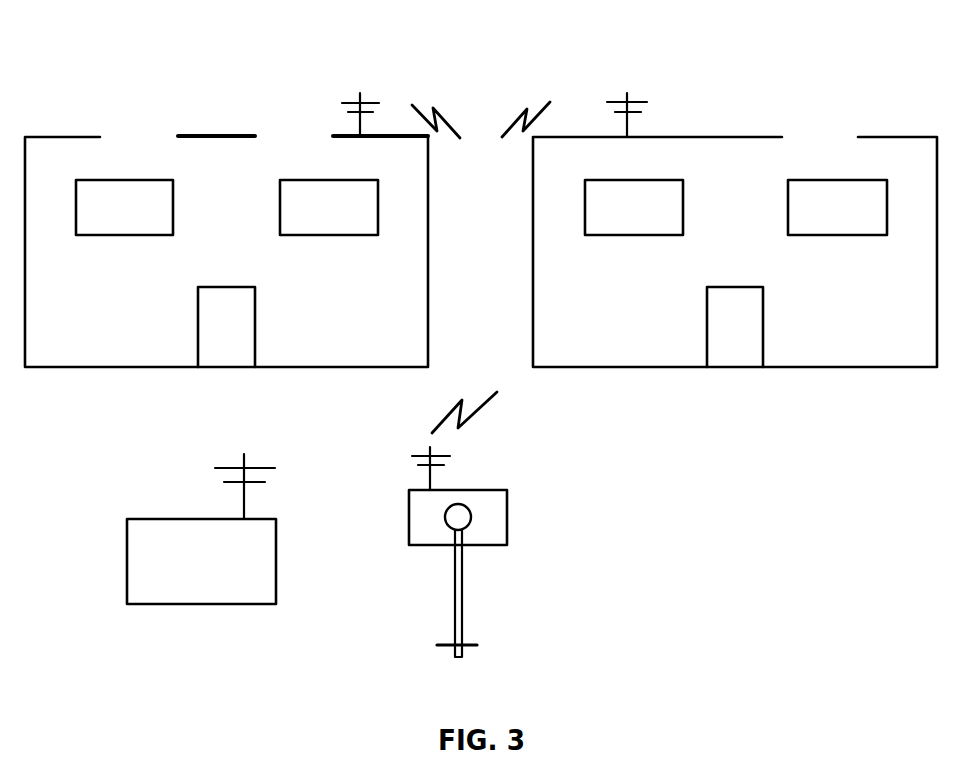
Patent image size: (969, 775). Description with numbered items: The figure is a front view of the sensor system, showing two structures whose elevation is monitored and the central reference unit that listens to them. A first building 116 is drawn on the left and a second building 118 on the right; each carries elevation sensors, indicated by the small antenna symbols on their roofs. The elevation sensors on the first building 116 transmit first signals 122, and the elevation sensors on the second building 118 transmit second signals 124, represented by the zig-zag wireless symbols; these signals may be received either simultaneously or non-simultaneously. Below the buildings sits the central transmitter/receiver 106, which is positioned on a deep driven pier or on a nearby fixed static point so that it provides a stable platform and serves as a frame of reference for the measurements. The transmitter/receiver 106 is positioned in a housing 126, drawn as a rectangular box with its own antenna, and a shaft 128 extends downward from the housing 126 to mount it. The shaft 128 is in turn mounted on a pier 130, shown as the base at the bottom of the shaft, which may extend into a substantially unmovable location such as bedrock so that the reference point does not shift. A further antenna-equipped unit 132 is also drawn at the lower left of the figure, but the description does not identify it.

The central transmitter/receiver 106 is at (468, 507).
The first building 116 is at (713, 137).
The second building 118 is at (248, 136).
The first signals 122 is at (620, 103).
The second signals 124 is at (367, 108).
The housing 126 is at (500, 517).
The shaft 128 is at (453, 593).
The pier 130 is at (470, 640).
The remote device 132 is at (127, 567).